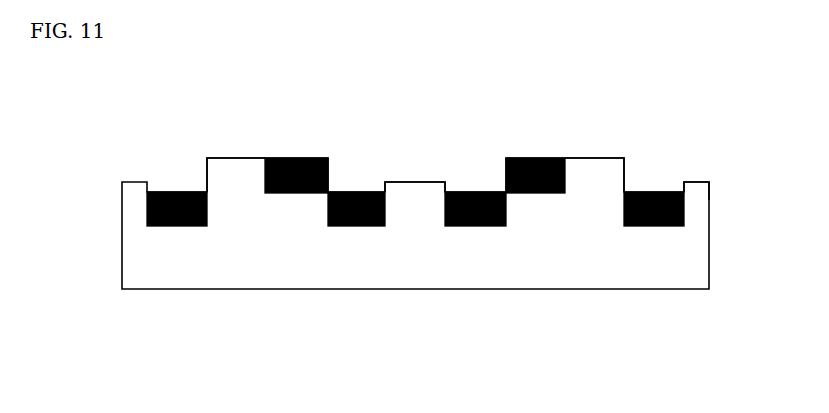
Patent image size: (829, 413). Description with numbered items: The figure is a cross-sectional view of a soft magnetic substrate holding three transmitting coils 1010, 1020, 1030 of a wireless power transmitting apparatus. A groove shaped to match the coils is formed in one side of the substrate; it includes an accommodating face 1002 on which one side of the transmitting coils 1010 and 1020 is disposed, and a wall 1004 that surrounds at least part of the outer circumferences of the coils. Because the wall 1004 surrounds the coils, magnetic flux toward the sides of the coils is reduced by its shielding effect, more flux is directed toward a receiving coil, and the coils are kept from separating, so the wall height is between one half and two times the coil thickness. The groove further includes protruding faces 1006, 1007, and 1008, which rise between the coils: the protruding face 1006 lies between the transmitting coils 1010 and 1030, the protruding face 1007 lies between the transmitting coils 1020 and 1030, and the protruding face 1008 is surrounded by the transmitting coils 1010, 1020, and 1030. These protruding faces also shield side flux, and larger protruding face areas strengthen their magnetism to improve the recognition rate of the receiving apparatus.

The accommodating face 1002 is at (232, 257).
The wall 1004 is at (694, 193).
The protruding face 1006 is at (238, 178).
The protruding face 1007 is at (592, 172).
The protruding face 1008 is at (420, 190).
The transmitting coil 1010 is at (160, 227).
The transmitting coil 1020 is at (473, 227).
The transmitting coil 1030 is at (293, 195).